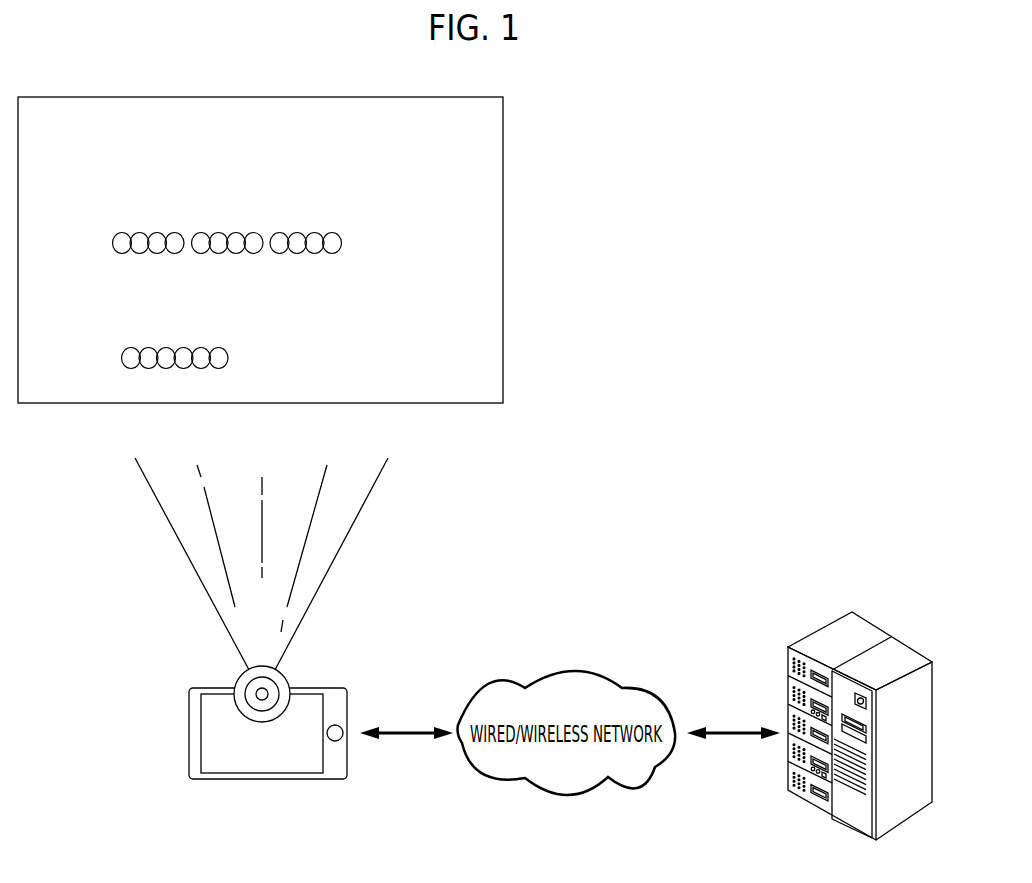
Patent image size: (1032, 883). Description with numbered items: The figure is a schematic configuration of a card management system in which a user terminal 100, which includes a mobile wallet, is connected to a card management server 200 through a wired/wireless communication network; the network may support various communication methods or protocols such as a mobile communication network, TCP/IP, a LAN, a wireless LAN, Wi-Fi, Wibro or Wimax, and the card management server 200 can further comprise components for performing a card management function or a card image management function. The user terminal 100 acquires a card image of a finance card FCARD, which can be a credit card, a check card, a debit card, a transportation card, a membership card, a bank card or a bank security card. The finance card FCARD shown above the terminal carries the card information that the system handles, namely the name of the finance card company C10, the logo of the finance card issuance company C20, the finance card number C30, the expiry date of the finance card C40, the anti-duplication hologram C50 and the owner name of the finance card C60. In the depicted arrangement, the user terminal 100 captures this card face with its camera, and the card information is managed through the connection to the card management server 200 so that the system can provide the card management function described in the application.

The user terminal 100 is at (189, 730).
The card management server 200 is at (866, 620).
The finance card FCARD is at (260, 250).
The name of finance card company C10 is at (125, 125).
The logo of finance card issuance company C20 is at (212, 183).
The finance card number C30 is at (229, 243).
The expiry date of finance card C40 is at (154, 302).
The anti-duplication hologram C50 is at (358, 315).
The owner name of finance card C60 is at (173, 358).